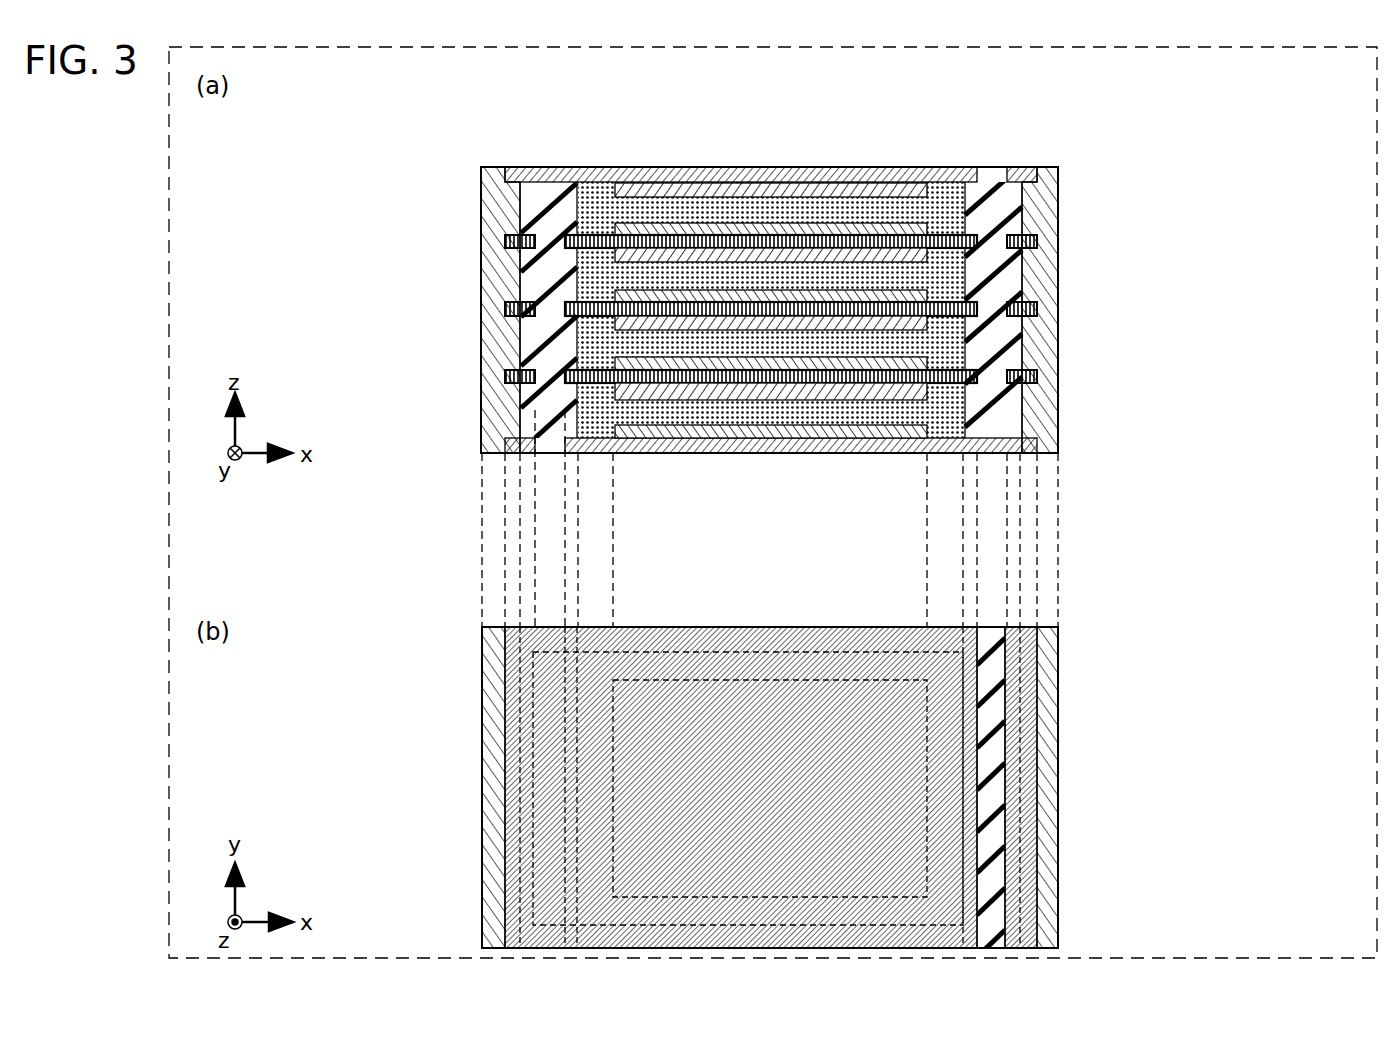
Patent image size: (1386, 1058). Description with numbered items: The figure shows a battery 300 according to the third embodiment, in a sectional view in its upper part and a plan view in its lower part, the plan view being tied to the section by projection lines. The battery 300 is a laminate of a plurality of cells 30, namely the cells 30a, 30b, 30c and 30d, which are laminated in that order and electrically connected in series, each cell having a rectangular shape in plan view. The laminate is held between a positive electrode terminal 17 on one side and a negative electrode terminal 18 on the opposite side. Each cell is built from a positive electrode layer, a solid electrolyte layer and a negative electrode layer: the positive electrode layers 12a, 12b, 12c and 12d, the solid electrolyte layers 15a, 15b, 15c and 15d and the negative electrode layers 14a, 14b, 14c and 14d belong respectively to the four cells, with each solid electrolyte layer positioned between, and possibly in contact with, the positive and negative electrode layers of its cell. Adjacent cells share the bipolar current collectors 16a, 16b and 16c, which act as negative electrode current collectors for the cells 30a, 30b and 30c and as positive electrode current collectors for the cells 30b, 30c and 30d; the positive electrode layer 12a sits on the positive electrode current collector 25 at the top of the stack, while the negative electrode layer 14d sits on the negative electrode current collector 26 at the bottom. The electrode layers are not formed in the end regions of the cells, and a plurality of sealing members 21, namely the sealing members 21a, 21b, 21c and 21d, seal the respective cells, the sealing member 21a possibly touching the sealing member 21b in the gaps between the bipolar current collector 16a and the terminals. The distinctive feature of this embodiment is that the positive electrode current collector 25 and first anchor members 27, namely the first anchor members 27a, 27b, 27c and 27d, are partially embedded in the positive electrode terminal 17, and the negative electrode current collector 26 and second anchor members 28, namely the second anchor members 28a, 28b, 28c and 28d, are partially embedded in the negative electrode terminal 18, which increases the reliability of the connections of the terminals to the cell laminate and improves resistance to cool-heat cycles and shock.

The battery 300 is at (569, 120).
The positive electrode layer 12a is at (940, 190).
The positive electrode layer 12b is at (940, 255).
The positive electrode layer 12c is at (940, 323).
The positive electrode layer 12d is at (940, 392).
The negative electrode layer 14a is at (940, 229).
The negative electrode layer 14b is at (940, 296).
The negative electrode layer 14c is at (940, 364).
The negative electrode layer 14d is at (940, 432).
The solid electrolyte layer 15a is at (940, 210).
The solid electrolyte layer 15b is at (940, 276).
The solid electrolyte layer 15c is at (940, 344).
The solid electrolyte layer 15d is at (940, 413).
The bipolar current collector 16a is at (940, 242).
The bipolar current collector 16b is at (940, 309).
The bipolar current collector 16c is at (940, 377).
The positive electrode terminal 17 is at (490, 172).
The negative electrode terminal 18 is at (1048, 172).
The sealing member 21 is at (682, 309).
The sealing member 21a is at (549, 206).
The sealing member 21b is at (549, 292).
The sealing member 21c is at (549, 383).
The sealing member 21d is at (556, 418).
The positive electrode current collector 25 is at (985, 176).
The negative electrode current collector 26 is at (985, 446).
The first anchor member 27 is at (439, 326).
The first anchor member 27a is at (520, 236).
The first anchor member 27b is at (520, 303).
The first anchor member 27c is at (520, 371).
The first anchor member 27d is at (520, 440).
The second anchor member 28 is at (1046, 253).
The second anchor member 28a is at (1012, 172).
The second anchor member 28b is at (1030, 241).
The second anchor member 28c is at (1030, 308).
The second anchor member 28d is at (1030, 380).
The cell 30 is at (959, 326).
The cell 30a is at (959, 164).
The cell 30b is at (959, 274).
The cell 30c is at (959, 385).
The cell 30d is at (966, 477).